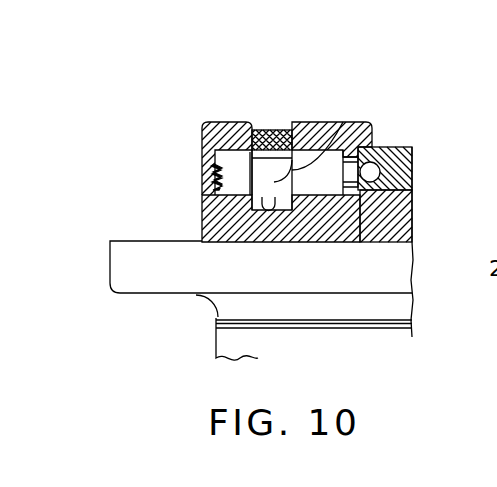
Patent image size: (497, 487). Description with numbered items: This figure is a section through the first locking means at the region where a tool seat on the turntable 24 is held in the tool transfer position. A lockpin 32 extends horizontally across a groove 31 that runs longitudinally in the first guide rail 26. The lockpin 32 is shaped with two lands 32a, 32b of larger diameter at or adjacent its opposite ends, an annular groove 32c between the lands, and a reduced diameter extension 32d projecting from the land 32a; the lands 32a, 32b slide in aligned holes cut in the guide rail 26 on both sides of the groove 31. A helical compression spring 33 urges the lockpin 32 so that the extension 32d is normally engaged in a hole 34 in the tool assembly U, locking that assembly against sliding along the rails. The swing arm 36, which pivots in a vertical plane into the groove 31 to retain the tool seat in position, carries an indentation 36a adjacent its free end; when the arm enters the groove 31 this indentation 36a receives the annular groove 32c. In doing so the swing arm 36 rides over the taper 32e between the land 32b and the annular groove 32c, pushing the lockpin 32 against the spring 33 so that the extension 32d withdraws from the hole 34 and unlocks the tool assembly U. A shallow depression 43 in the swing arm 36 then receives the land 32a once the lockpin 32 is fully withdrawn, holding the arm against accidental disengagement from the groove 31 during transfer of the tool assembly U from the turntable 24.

The toolholder 24 is at (116, 268).
The first guide rail 26 is at (212, 218).
The groove 31 is at (257, 178).
The lockpin 32 is at (318, 194).
The land 32a is at (323, 135).
The land 32b is at (231, 158).
The annular groove 32c is at (273, 142).
The reduced diameter extension 32d is at (405, 208).
The taper 32e is at (237, 180).
The helical compression spring 33 is at (213, 176).
The hole 34 is at (390, 172).
The swing arm 36 is at (257, 172).
The indentation 36a is at (338, 122).
The depression 43 is at (266, 196).
The tool assembly U is at (412, 160).